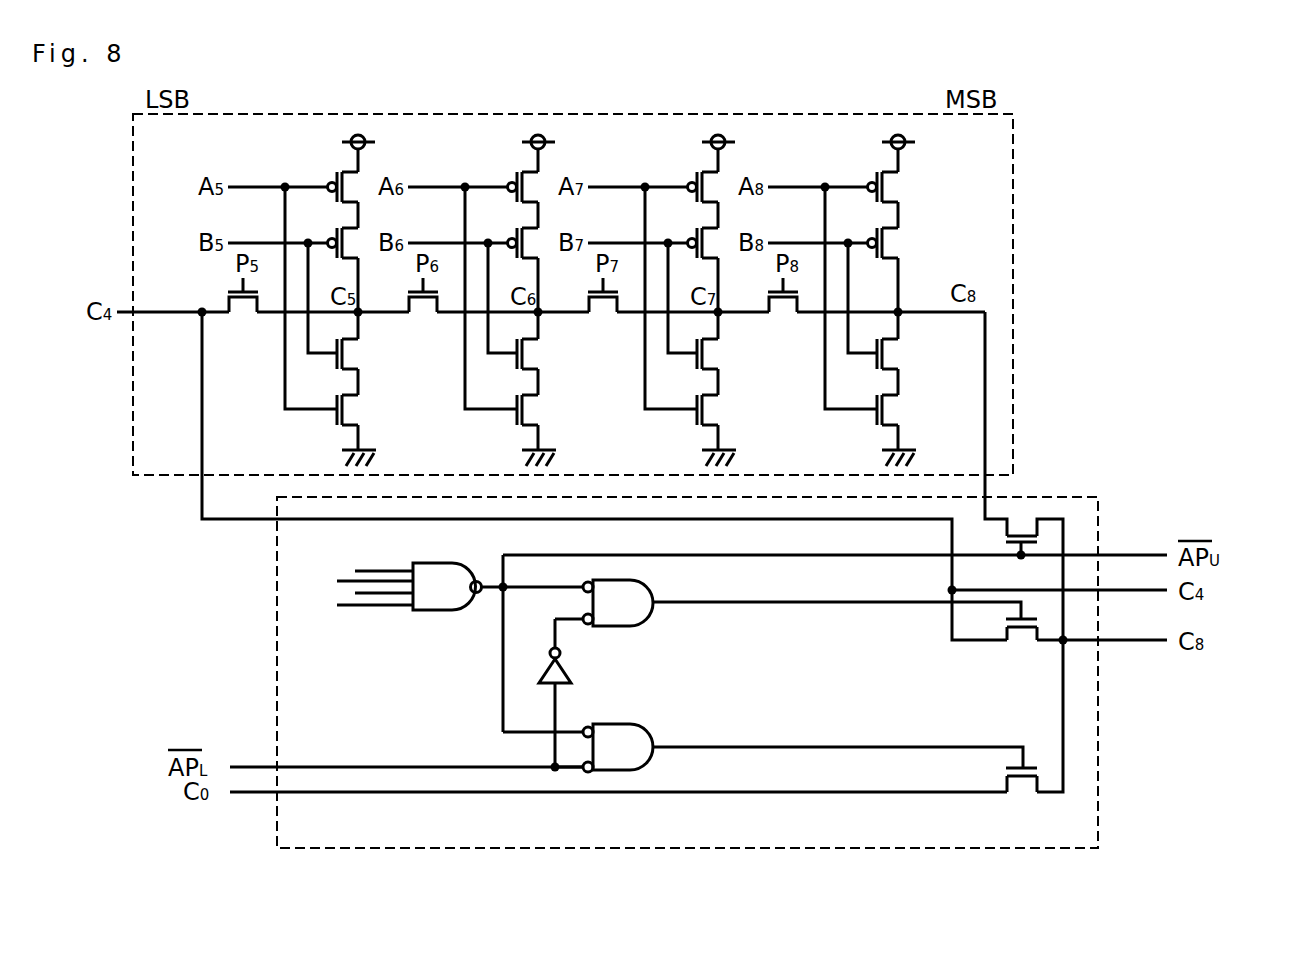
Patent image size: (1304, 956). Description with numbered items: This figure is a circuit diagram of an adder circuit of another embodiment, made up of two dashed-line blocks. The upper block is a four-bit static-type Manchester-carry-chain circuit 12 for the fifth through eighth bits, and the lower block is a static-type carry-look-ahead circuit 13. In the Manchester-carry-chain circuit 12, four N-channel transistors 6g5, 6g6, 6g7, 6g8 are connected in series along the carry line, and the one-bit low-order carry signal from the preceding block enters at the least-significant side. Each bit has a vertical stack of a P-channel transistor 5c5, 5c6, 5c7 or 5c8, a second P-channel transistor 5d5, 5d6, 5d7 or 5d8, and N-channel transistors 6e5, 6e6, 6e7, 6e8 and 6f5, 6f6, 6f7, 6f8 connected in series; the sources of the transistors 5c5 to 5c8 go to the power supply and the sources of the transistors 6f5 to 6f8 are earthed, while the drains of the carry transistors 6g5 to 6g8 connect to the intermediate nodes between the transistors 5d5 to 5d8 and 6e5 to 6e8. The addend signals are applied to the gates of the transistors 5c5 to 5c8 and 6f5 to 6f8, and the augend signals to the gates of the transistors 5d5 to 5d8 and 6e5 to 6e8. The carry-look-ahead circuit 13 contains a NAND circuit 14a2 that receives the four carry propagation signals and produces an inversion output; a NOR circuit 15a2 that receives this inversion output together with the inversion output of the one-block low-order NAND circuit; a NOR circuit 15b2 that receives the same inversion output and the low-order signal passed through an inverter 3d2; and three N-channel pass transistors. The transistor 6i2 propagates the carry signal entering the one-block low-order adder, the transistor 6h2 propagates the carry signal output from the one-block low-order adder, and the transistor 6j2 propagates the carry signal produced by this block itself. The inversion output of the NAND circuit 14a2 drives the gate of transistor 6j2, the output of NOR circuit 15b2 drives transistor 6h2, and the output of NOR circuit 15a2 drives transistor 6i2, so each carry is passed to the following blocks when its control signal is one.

The Manchester-carry-chain circuit 12 is at (1013, 166).
The carry-look-ahead circuit 13 is at (1097, 719).
The PchTR 5c5 is at (330, 177).
The PchTR 5c6 is at (510, 177).
The PchTR 5c7 is at (690, 177).
The PchTR 5c8 is at (870, 177).
The PchTR 5d5 is at (357, 240).
The PchTR 5d6 is at (537, 240).
The PchTR 5d7 is at (717, 240).
The PchTR 5d8 is at (897, 240).
The NchTR 6e5 is at (362, 357).
The NchTR 6e6 is at (542, 357).
The NchTR 6e7 is at (722, 357).
The NchTR 6e8 is at (900, 353).
The NchTR 6f5 is at (362, 417).
The NchTR 6f6 is at (542, 417).
The NchTR 6f7 is at (722, 417).
The NchTR 6f8 is at (900, 411).
The NchTR 6g5 is at (243, 316).
The NchTR 6g6 is at (423, 316).
The NchTR 6g7 is at (603, 316).
The NchTR 6g8 is at (783, 316).
The NchTR 6j2 is at (1024, 516).
The NchTR 6h2 is at (1022, 644).
The NchTR 6i2 is at (1025, 795).
The NAND circuit 14a2 is at (440, 612).
The NOR circuit 15b2 is at (640, 625).
The NOR circuit 15a2 is at (650, 725).
The inverter 3d2 is at (567, 675).